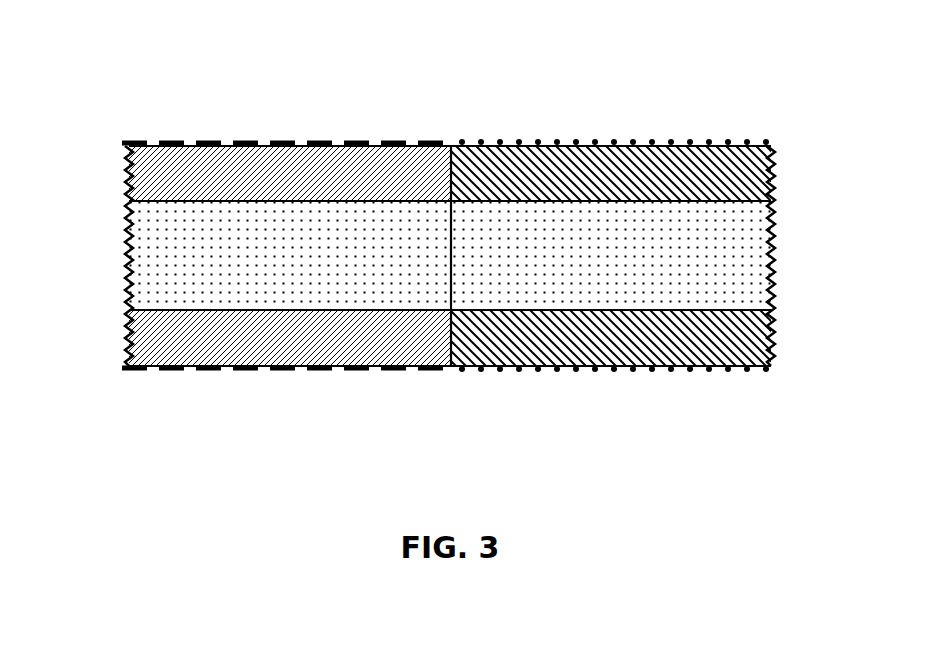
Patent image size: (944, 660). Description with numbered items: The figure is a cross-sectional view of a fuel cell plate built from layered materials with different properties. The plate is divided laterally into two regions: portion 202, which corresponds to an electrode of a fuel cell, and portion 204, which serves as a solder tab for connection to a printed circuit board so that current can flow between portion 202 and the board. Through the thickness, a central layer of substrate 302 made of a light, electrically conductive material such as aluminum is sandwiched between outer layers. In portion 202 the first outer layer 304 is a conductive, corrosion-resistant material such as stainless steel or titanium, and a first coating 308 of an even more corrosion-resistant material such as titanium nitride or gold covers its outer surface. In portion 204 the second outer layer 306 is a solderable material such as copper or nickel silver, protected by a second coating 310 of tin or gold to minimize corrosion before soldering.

The portion 202 is at (776, 77).
The portion 204 is at (125, 77).
The substrate 302 is at (470, 273).
The first outer layer 304 is at (772, 182).
The second outer layer 306 is at (128, 183).
The first coating 308 is at (650, 373).
The second coating 310 is at (250, 370).